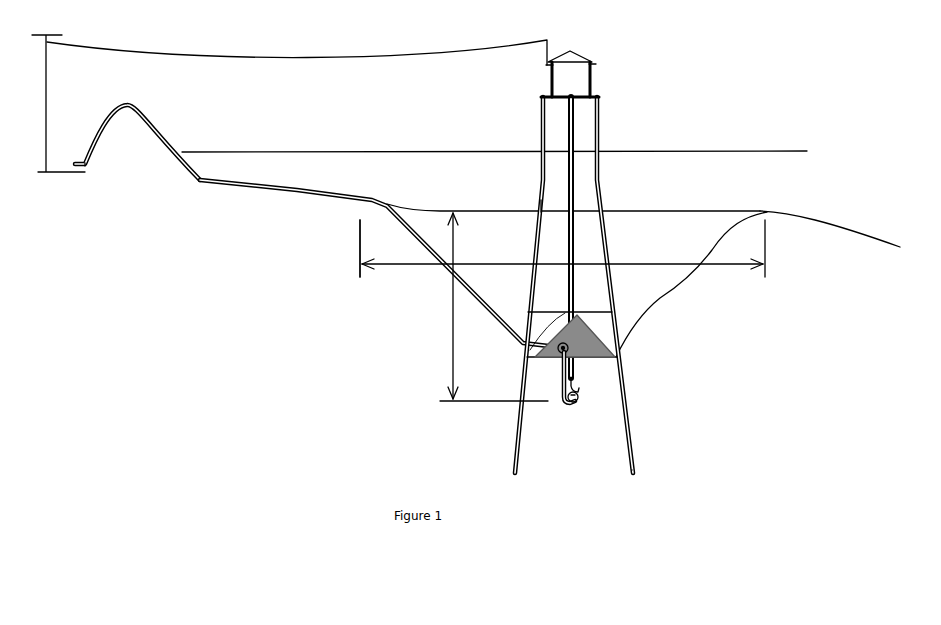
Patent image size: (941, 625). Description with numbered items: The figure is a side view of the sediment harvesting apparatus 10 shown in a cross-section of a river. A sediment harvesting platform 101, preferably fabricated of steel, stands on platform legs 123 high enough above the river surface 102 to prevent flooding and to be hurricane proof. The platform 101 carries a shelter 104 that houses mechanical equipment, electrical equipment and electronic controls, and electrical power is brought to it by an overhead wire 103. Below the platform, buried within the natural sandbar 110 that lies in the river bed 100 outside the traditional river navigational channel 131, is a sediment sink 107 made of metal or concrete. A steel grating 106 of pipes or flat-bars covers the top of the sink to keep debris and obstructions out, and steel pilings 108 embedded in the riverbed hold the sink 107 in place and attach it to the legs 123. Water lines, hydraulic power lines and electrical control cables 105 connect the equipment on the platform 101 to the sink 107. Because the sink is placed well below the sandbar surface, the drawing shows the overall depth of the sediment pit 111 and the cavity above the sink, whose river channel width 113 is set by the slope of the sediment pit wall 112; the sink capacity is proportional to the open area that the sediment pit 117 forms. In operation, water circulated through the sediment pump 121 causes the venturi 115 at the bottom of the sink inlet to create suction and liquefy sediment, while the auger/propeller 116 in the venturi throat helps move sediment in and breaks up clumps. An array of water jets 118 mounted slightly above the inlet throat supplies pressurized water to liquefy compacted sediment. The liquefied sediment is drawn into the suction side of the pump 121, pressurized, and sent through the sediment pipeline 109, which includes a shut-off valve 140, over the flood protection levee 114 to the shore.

The sediment harvesting apparatus 10 is at (666, 48).
The river bed 100 is at (762, 208).
The sediment harvesting platform 101 is at (599, 121).
The river surface 102 is at (420, 150).
The overhead wire 103 is at (196, 53).
The shelter 104 is at (592, 67).
The electrical control cables 105 is at (574, 140).
The steel grating 106 is at (583, 336).
The sediment sink 107 is at (590, 370).
The steel pilings 108 is at (631, 416).
The sediment pipeline 109 is at (86, 168).
The sandbar 110 is at (559, 248).
The depth of sediment pit 111 is at (452, 347).
The sediment pit wall 112 is at (660, 300).
The river channel width 113 is at (423, 270).
The flood protection levee 114 is at (127, 134).
The venturi 115 is at (572, 403).
The auger/propeller 116 is at (530, 350).
The sediment pit 117 is at (562, 248).
The water jets 118 is at (576, 384).
The sediment pump 121 is at (558, 344).
The platform legs 123 is at (540, 204).
The river navigational channel 131 is at (834, 228).
The shut-off valve 140 is at (569, 399).